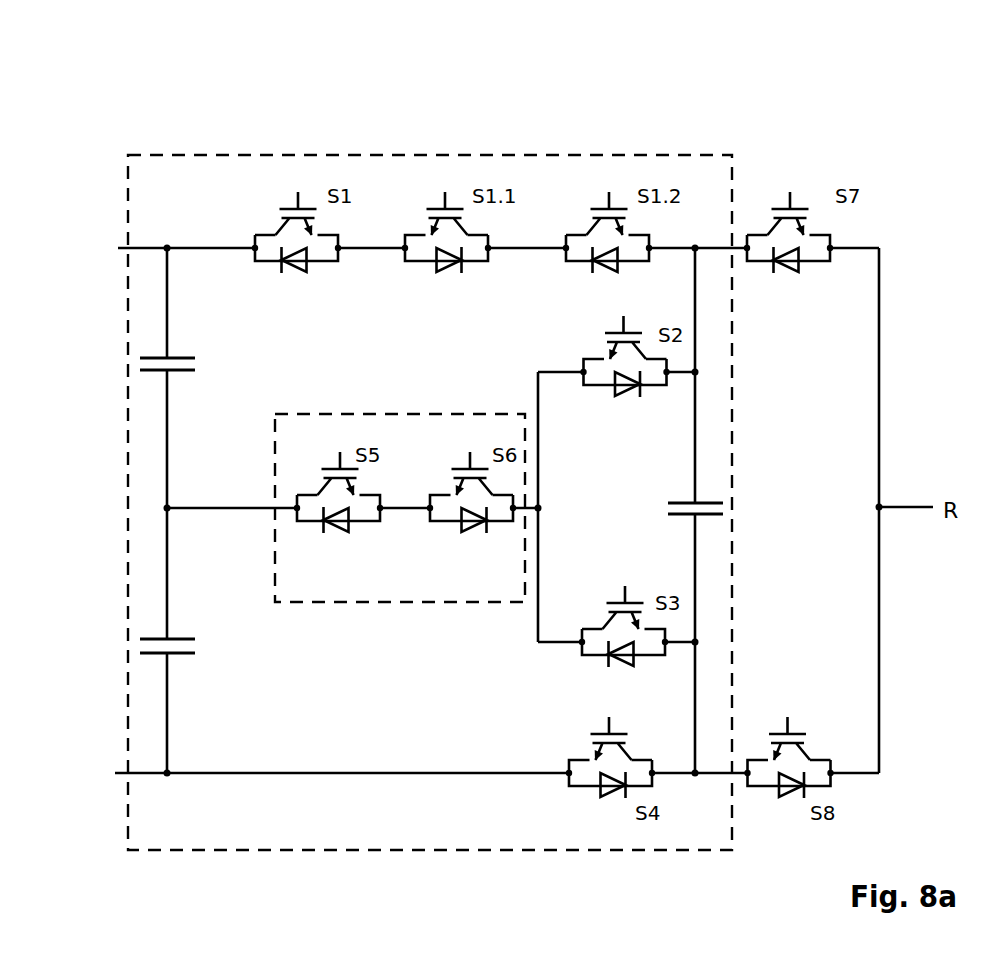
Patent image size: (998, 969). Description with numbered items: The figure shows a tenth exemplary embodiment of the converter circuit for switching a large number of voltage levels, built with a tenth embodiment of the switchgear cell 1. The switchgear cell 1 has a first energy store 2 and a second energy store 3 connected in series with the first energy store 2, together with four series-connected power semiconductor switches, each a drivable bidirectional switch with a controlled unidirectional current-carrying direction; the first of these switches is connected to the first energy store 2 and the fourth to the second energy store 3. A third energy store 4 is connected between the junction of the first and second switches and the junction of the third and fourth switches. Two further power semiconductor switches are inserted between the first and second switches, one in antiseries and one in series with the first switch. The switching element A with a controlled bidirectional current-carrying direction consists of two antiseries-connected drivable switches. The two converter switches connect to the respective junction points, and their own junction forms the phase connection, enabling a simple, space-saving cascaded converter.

The switchgear cell 1 is at (349, 155).
The first energy store 2 is at (158, 357).
The second energy store 3 is at (155, 637).
The third energy store 4 is at (710, 502).
The switching element with a controlled bidirectional current-carrying direction A is at (275, 414).